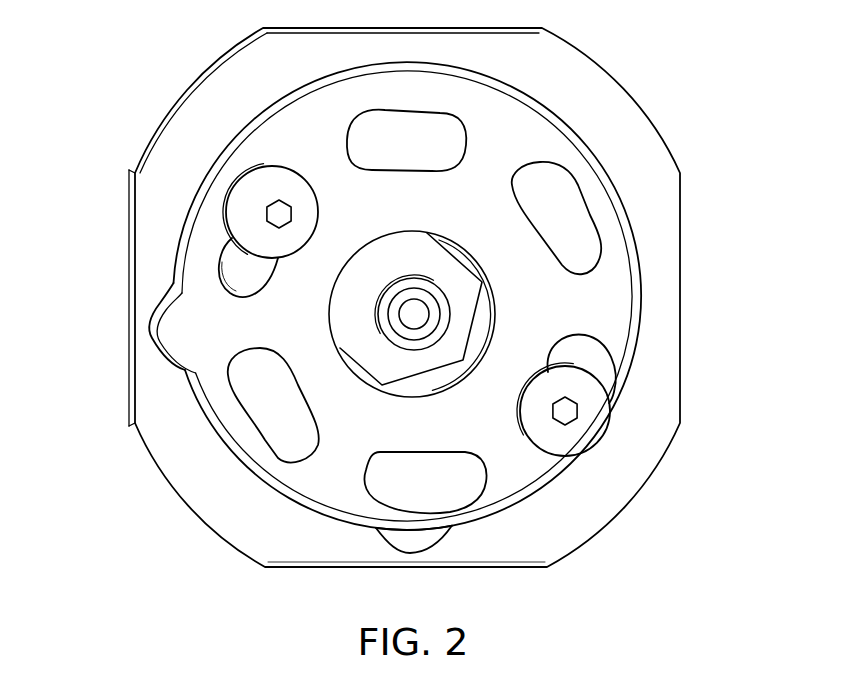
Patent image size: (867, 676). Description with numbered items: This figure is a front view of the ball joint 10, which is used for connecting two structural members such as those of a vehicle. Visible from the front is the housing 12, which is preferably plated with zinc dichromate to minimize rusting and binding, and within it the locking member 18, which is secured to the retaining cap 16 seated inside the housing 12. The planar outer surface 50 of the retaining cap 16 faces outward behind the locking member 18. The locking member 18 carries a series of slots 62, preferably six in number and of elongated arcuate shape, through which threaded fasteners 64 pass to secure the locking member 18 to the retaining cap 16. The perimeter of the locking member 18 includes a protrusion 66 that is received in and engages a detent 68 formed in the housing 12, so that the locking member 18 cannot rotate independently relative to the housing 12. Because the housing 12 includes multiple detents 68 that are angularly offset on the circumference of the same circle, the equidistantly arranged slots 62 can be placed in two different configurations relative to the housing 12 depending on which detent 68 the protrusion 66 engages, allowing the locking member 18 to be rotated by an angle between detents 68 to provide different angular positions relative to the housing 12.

The ball joint 10 is at (96, 211).
The housing 12 is at (677, 160).
The retaining cap 16 is at (578, 233).
The locking member 18 is at (611, 290).
The outer surface 50 is at (594, 356).
The slot 62 is at (230, 278).
The threaded fastener 64 is at (253, 188).
The protrusion 66 is at (166, 320).
The detent 68 is at (148, 333).